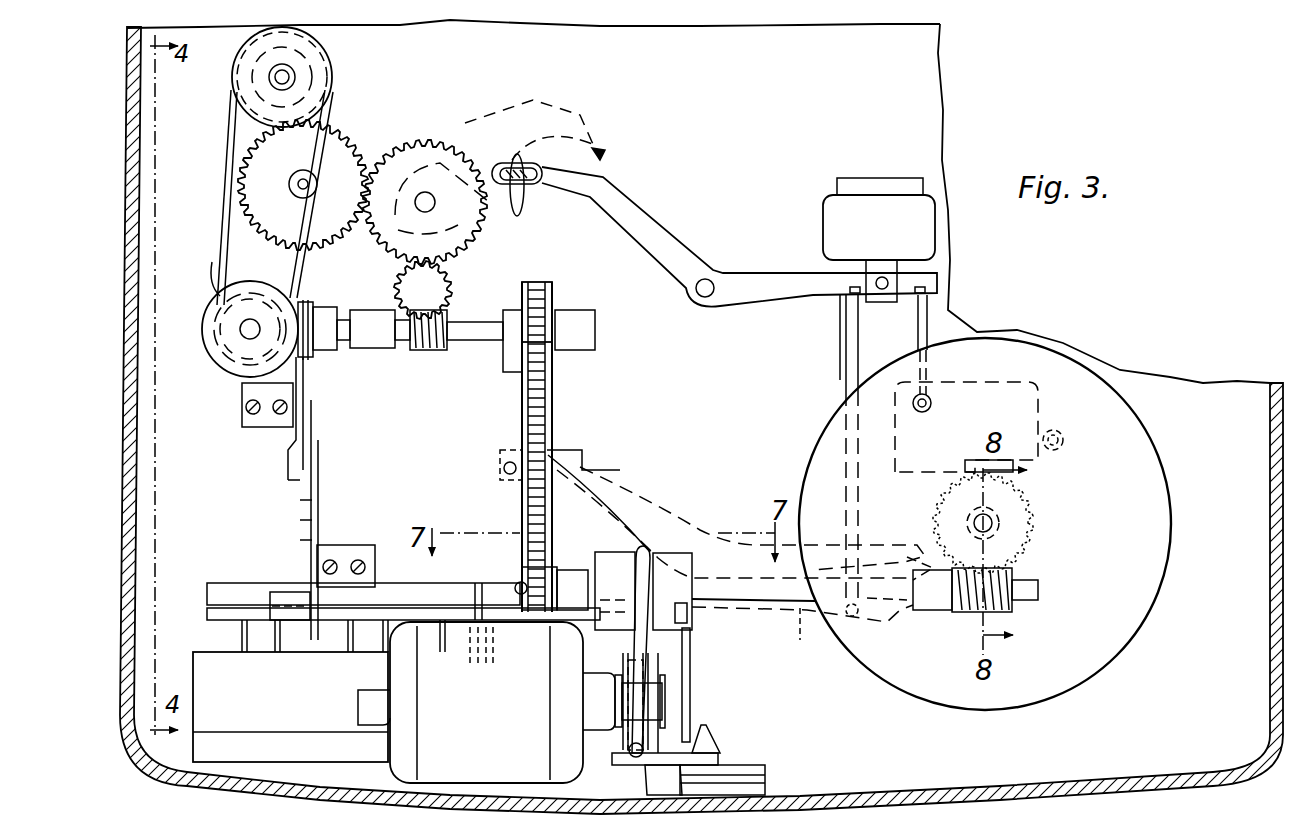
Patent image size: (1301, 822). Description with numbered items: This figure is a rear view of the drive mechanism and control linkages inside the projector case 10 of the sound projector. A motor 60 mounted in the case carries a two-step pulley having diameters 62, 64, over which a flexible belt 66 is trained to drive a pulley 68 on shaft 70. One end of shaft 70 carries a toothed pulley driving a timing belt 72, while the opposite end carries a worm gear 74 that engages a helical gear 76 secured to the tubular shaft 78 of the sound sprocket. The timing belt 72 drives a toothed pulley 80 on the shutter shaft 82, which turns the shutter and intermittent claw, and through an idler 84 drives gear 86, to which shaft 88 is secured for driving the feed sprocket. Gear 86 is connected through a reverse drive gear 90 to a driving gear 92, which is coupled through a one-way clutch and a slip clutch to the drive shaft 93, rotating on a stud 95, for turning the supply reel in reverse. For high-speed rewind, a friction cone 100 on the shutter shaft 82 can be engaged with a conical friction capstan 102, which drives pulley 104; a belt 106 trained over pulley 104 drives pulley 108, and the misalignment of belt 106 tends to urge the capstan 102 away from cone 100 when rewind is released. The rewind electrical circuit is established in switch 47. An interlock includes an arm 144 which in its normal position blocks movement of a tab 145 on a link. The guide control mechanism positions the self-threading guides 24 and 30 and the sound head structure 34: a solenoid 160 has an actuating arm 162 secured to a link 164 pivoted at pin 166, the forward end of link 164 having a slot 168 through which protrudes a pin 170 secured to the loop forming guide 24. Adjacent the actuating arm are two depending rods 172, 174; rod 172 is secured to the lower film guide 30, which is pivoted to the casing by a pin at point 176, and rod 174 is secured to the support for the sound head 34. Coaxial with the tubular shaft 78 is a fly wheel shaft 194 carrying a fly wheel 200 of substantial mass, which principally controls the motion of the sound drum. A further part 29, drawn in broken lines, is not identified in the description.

The housing 10 is at (925, 78).
The loop forming guide 24 is at (569, 117).
The chute 29 is at (656, 488).
The lower film guide 30 is at (808, 639).
The sound head structure 34 is at (1020, 378).
The switch 47 is at (226, 634).
The motor 60 is at (486, 702).
The two-step pulley diameter 62 is at (627, 698).
The two-step pulley diameter 64 is at (660, 698).
The flexible belt 66 is at (643, 643).
The pulley 68 is at (685, 552).
The shaft 70 is at (725, 590).
The timing belt 72 is at (553, 422).
The worm gear 74 is at (968, 620).
The helical gear 76 is at (1030, 543).
The tubular shaft 78 is at (998, 523).
The toothed pulley 80 is at (552, 300).
The shutter shaft 82 is at (470, 345).
The idler 84 is at (455, 278).
The drive gear 86 is at (462, 160).
The shaft 88 is at (427, 203).
The reverse drive gear 90 is at (252, 148).
The driving gear 92 is at (237, 82).
The drive shaft 93 is at (292, 78).
The stud 95 is at (297, 72).
The friction cone 100 is at (306, 360).
The conical friction capstan 102 is at (216, 322).
The pulley 104 is at (207, 266).
The belt 106 is at (230, 197).
The pulley 108 is at (320, 92).
The arm 144 is at (690, 717).
The tab 145 is at (705, 748).
The solenoid 160 is at (877, 195).
The actuating arm 162 is at (852, 300).
The link 164 is at (758, 303).
The pin 166 is at (710, 279).
The slot 168 is at (533, 178).
The pin 170 is at (528, 212).
The rod 172 is at (852, 364).
The rod 174 is at (928, 318).
The pivot point 176 is at (500, 472).
The fly wheel shaft 194 is at (975, 523).
The fly wheel 200 is at (1163, 486).